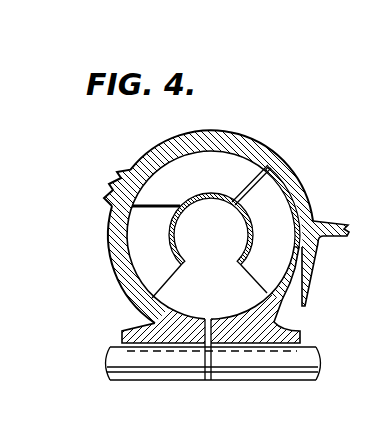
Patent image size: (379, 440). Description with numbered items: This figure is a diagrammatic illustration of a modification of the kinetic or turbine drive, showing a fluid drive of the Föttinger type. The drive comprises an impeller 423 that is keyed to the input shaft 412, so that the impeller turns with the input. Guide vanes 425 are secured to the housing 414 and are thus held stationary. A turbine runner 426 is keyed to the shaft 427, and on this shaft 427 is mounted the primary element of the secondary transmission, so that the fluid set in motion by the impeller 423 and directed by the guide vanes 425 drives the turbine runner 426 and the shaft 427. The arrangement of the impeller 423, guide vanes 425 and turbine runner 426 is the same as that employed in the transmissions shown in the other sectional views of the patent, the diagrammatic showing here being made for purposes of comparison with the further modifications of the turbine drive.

The guide vanes 425 is at (209, 158).
The turbine runner 426 is at (275, 200).
The housing 414 is at (320, 221).
The impeller 423 is at (137, 261).
The input shaft 412 is at (107, 346).
The shaft 427 is at (316, 347).